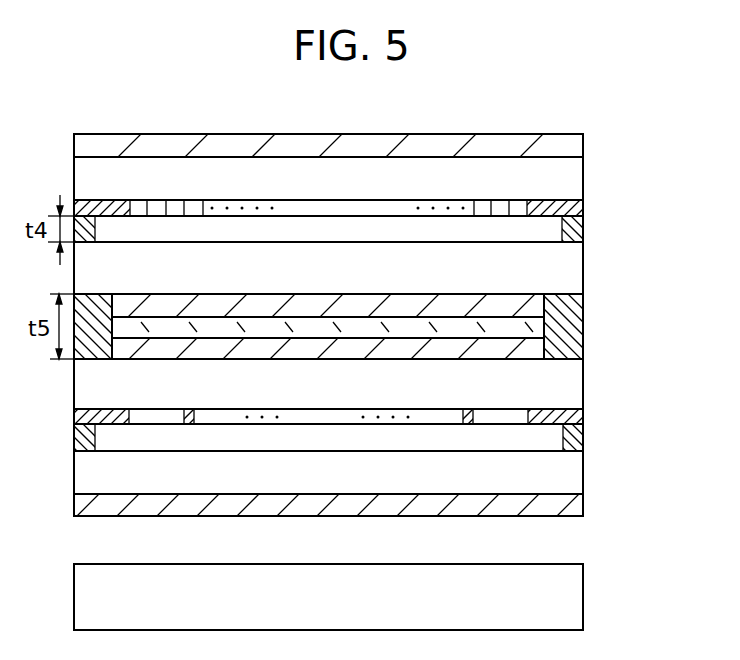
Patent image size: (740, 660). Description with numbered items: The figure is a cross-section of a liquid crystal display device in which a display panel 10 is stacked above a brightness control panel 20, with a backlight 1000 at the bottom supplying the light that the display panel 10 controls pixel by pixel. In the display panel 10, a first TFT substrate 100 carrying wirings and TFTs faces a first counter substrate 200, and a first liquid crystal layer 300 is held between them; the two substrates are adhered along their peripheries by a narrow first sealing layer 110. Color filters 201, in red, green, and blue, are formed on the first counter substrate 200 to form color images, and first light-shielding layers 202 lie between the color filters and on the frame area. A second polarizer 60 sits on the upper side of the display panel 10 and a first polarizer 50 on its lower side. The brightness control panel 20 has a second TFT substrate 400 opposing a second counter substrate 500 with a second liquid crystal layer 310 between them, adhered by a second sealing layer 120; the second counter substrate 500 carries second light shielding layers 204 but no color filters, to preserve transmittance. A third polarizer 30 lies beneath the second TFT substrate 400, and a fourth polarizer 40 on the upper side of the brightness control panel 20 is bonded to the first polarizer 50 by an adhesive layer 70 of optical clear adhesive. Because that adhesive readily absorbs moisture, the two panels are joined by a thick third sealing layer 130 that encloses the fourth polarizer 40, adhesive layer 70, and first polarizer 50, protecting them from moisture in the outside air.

The second polarizer 60 is at (585, 150).
The first counter substrate 200 is at (572, 181).
The color filters 201 is at (138, 200).
The first light-shielding layers 202 is at (578, 210).
The first sealing layer 110 is at (583, 231).
The first TFT substrate 100 is at (575, 268).
The display panel 10 is at (652, 150).
The third sealing layer 130 is at (568, 323).
The first polarizer 50 is at (485, 308).
The adhesive layer 70 is at (435, 327).
The fourth polarizer 40 is at (395, 348).
The first liquid crystal layer 300 is at (377, 230).
The second counter substrate 500 is at (562, 378).
The second light shielding layers 204 is at (112, 408).
The second sealing layer 120 is at (580, 437).
The brightness control panel 20 is at (655, 359).
The second TFT substrate 400 is at (565, 478).
The second liquid crystal layer 310 is at (402, 450).
The third polarizer 30 is at (568, 507).
The backlight 1000 is at (560, 590).